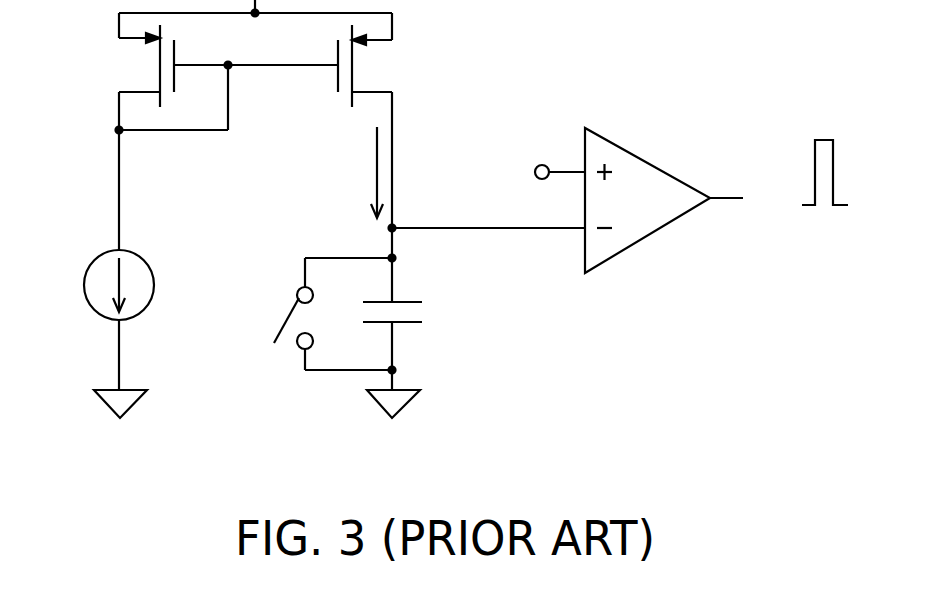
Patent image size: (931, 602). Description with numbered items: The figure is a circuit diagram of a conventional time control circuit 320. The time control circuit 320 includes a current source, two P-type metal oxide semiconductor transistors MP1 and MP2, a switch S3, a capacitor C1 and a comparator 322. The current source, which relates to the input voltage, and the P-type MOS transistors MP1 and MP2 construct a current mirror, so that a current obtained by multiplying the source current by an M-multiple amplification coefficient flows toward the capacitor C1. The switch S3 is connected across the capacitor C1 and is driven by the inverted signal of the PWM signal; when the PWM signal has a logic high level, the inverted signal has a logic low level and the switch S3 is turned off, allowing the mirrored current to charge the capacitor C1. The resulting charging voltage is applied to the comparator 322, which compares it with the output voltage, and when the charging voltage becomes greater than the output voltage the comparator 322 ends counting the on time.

The time control circuit 320 is at (718, 448).
The comparator 322 is at (648, 158).
The P-type MOS transistor MP1 is at (154, 71).
The P-type MOS transistor MP2 is at (330, 71).
The switch S3 is at (333, 314).
The capacitor C1 is at (407, 316).